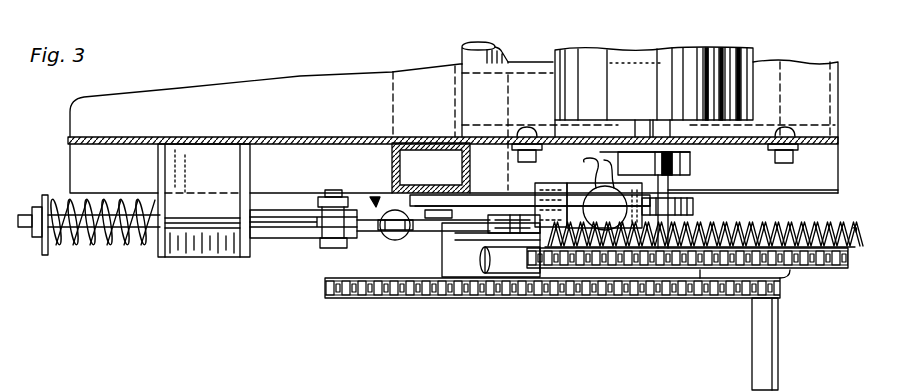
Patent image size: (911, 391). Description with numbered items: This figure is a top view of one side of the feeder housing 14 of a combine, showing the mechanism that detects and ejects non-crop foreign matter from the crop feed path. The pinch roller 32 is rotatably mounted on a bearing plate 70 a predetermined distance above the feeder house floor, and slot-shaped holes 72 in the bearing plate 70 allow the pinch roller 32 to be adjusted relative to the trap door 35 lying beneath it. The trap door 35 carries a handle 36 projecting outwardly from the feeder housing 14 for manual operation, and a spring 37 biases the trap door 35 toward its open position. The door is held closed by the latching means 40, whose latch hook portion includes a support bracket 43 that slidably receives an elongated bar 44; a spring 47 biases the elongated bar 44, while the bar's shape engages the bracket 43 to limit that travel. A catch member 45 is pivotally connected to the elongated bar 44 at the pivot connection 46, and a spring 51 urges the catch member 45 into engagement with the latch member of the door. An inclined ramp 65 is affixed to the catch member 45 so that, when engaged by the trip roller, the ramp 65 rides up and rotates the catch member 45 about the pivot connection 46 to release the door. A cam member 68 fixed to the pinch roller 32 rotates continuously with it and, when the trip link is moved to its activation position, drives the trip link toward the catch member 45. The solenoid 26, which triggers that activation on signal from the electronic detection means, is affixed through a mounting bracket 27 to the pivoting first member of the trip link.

The feeder housing 14 is at (135, 137).
The solenoid 26 is at (585, 182).
The mounting bracket 27 is at (540, 185).
The pinch roller 32 is at (654, 95).
The trap door 35 is at (546, 62).
The handle 36 is at (775, 342).
The spring 37 is at (800, 225).
The latching means 40 is at (376, 197).
The support bracket 43 is at (182, 262).
The elongated bar 44 is at (200, 262).
The catch member 45 is at (346, 248).
The pivot connection 46 is at (328, 250).
The spring 47 is at (117, 245).
The spring 51 is at (392, 242).
The inclined ramp 65 is at (492, 228).
The cam member 68 is at (700, 207).
The bearing plate 70 is at (715, 152).
The slot-shaped holes 72 is at (522, 127).